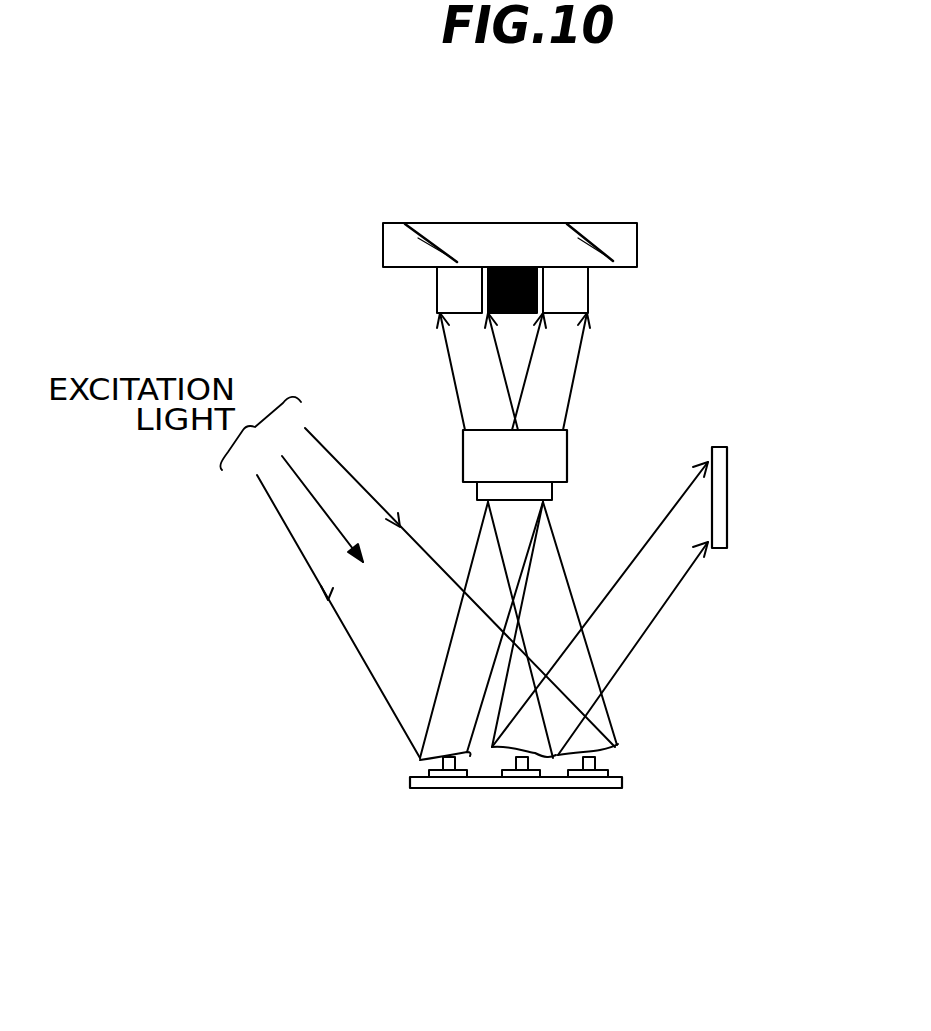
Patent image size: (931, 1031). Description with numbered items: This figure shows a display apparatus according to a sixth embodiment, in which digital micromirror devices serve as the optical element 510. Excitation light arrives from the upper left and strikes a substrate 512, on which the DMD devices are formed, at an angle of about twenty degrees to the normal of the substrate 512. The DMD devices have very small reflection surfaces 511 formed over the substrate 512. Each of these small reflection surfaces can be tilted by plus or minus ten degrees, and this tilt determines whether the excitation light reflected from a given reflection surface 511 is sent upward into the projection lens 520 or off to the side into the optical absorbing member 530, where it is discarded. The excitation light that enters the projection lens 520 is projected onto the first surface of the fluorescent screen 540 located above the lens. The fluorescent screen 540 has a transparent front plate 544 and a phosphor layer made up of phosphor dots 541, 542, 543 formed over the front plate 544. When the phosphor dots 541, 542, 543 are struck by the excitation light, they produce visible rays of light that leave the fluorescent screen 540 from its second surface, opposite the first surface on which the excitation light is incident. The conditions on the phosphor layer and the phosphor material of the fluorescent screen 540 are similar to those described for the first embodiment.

The optical element 510 is at (568, 808).
The reflection surfaces 511 is at (618, 744).
The substrate 512 is at (410, 817).
The projection lens 520 is at (567, 452).
The optical absorbing member 530 is at (727, 495).
The fluorescent screen 540 is at (583, 246).
The phosphor dot 541 is at (452, 287).
The phosphor dot 542 is at (517, 262).
The phosphor dot 543 is at (568, 285).
The transparent front plate 544 is at (627, 223).